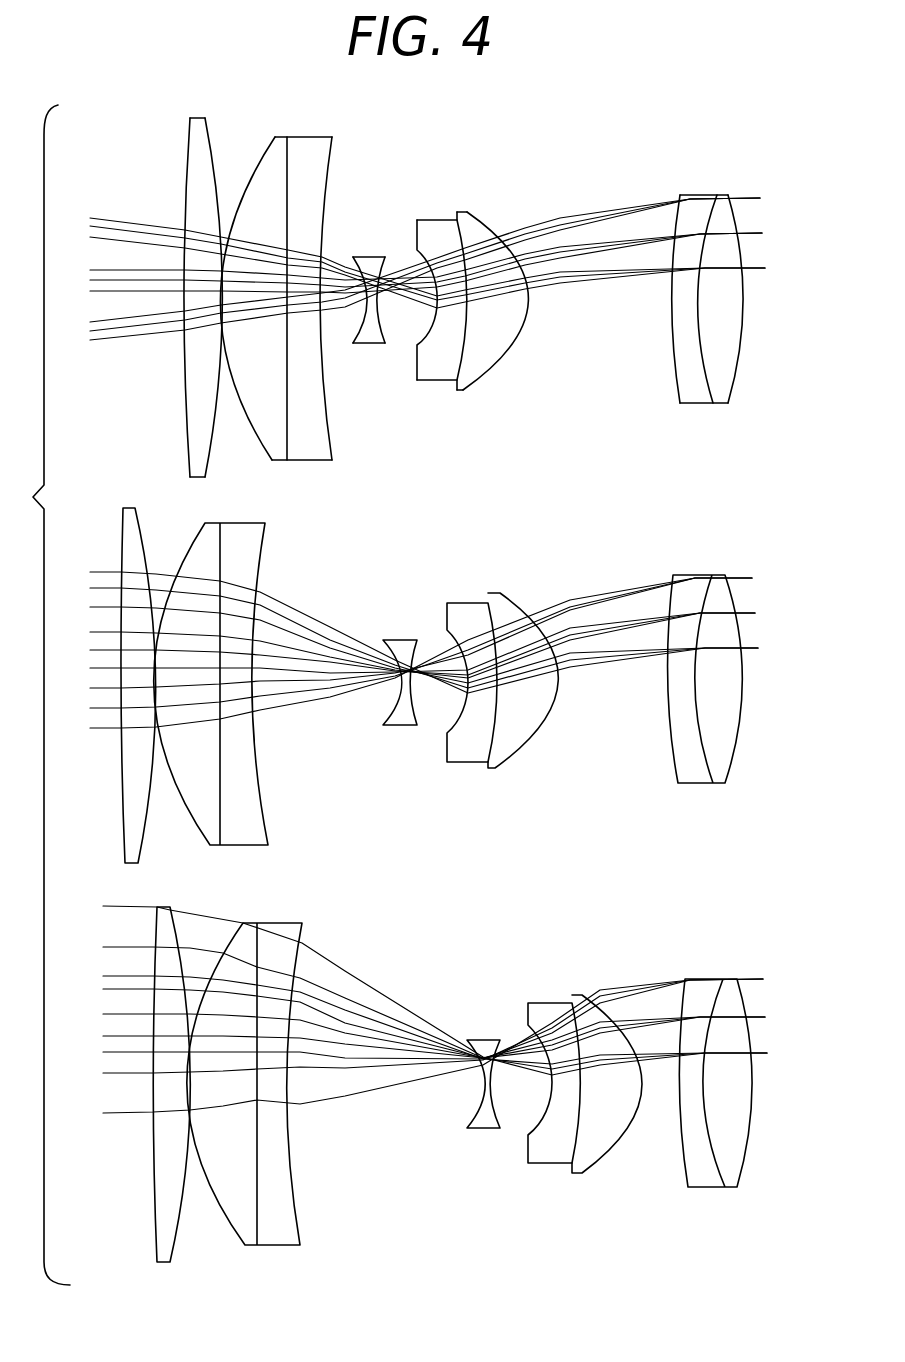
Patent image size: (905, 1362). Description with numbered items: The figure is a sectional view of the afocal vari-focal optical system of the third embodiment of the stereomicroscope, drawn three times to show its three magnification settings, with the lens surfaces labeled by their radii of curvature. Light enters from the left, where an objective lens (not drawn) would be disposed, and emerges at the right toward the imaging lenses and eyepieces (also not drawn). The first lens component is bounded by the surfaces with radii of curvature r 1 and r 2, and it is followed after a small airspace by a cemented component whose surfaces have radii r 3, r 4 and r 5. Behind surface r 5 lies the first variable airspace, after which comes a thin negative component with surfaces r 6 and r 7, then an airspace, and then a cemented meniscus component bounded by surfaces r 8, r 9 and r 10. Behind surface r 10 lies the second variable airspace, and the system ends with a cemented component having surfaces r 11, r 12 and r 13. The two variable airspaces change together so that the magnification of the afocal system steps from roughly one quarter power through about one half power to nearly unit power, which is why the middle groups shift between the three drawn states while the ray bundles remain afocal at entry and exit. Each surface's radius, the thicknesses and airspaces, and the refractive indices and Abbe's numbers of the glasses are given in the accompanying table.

The radius of curvature r1 1 is at (188, 434).
The radius of curvature r2 2 is at (208, 434).
The radius of curvature r3 3 is at (258, 428).
The radius of curvature r4 4 is at (287, 428).
The radius of curvature r5 5 is at (328, 413).
The radius of curvature r6 6 is at (356, 326).
The radius of curvature r7 7 is at (382, 327).
The radius of curvature r8 8 is at (420, 340).
The radius of curvature r9 9 is at (460, 353).
The radius of curvature r10 10 is at (505, 360).
The radius of curvature r11 11 is at (677, 372).
The radius of curvature r12 12 is at (711, 380).
The radius of curvature r13 13 is at (735, 375).